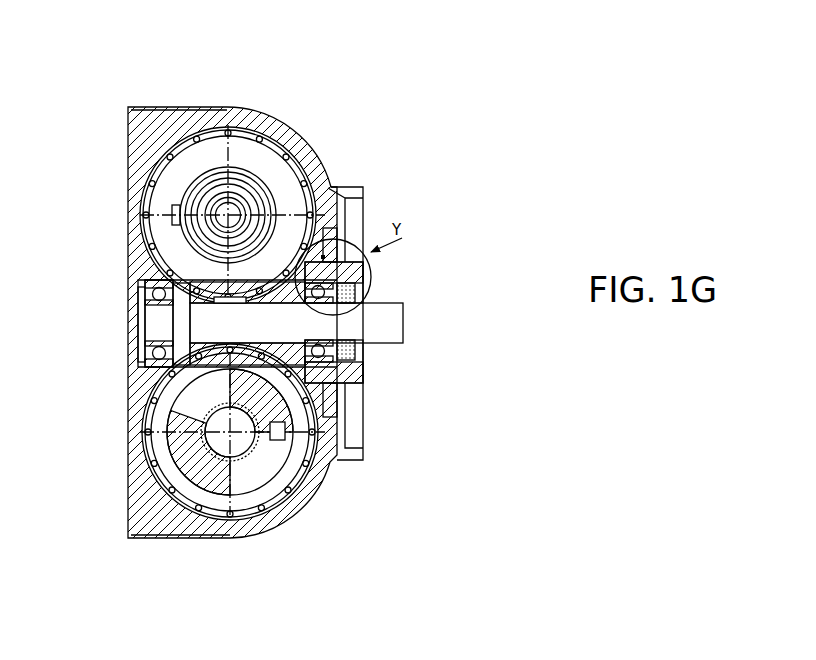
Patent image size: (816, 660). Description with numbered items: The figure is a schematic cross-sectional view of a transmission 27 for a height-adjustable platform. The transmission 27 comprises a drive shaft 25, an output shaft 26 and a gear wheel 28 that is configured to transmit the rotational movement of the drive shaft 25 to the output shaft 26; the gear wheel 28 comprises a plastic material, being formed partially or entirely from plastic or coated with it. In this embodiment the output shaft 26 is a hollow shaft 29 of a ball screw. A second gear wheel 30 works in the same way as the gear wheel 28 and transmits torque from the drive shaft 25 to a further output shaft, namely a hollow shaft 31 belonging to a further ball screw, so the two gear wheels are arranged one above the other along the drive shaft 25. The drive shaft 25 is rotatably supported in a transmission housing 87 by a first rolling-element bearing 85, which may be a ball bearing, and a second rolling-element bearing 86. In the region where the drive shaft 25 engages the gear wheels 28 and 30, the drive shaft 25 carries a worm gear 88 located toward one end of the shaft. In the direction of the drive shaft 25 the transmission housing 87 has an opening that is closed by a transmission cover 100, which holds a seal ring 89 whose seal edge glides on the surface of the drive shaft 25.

The transmission housing 87 is at (205, 120).
The hollow shaft 31 is at (258, 157).
The second gear wheel 30 is at (277, 160).
The transmission 27 is at (409, 151).
The transmission cover 100 is at (366, 262).
The drive shaft 25 is at (362, 324).
The seal ring 89 is at (367, 368).
The second rolling-element bearing 86 is at (367, 358).
The first rolling-element bearing 85 is at (140, 285).
The worm gear 88 is at (175, 355).
The output shaft 26 is at (252, 399).
The hollow shaft 29 is at (311, 476).
The gear wheel 28 is at (280, 483).